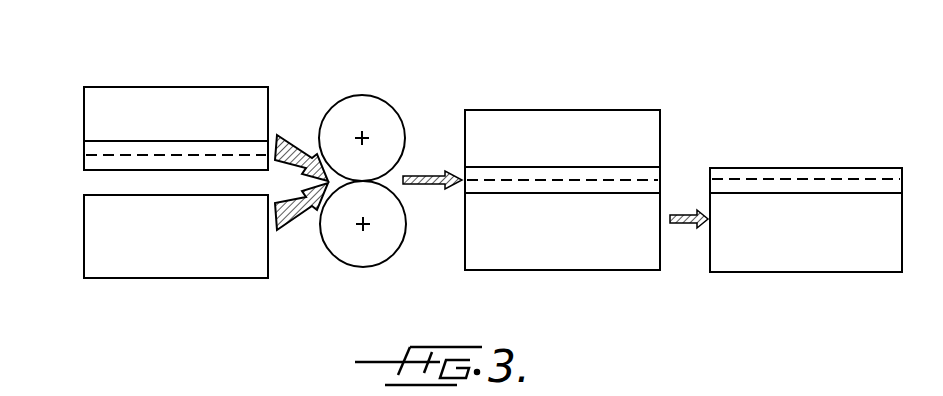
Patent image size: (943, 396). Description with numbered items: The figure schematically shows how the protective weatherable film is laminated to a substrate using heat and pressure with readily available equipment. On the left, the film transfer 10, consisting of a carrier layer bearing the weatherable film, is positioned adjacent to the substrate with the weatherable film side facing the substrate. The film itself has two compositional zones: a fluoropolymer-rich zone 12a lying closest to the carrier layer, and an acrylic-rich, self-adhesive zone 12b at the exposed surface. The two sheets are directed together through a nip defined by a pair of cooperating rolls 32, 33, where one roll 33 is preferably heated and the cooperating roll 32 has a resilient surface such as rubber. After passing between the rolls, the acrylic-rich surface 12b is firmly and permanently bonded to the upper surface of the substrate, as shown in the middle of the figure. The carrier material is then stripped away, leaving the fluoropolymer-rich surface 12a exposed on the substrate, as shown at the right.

The film transfer 10 is at (108, 78).
The fluoropolymer-rich compositional zone 12a is at (134, 148).
The acrylic-rich compositional zone 12b is at (108, 165).
The cooperating roll 32 is at (358, 262).
The heated roll 33 is at (358, 100).